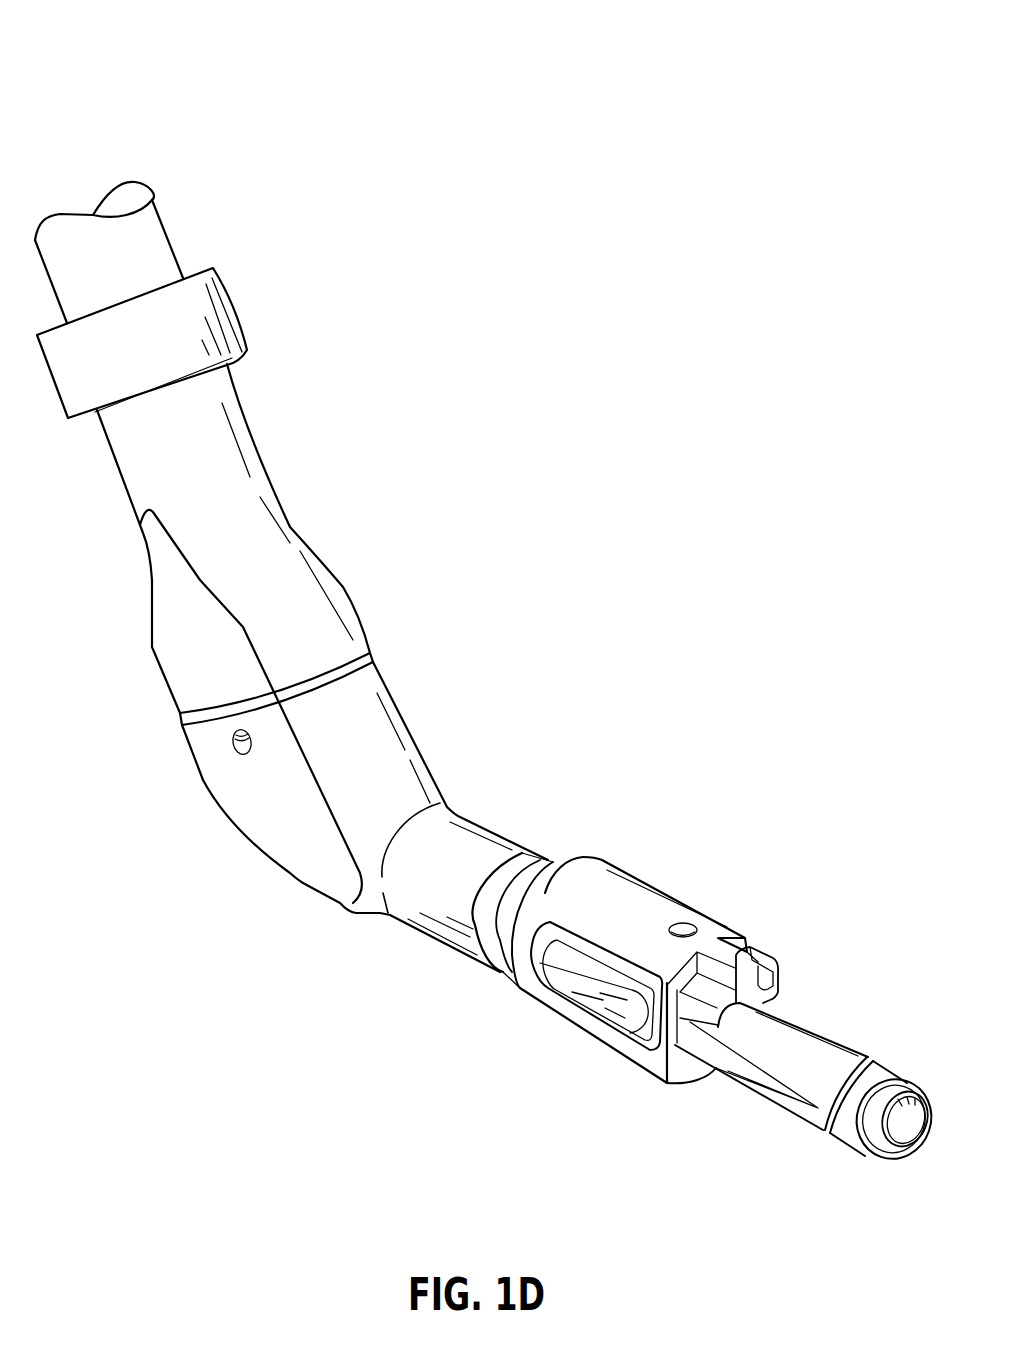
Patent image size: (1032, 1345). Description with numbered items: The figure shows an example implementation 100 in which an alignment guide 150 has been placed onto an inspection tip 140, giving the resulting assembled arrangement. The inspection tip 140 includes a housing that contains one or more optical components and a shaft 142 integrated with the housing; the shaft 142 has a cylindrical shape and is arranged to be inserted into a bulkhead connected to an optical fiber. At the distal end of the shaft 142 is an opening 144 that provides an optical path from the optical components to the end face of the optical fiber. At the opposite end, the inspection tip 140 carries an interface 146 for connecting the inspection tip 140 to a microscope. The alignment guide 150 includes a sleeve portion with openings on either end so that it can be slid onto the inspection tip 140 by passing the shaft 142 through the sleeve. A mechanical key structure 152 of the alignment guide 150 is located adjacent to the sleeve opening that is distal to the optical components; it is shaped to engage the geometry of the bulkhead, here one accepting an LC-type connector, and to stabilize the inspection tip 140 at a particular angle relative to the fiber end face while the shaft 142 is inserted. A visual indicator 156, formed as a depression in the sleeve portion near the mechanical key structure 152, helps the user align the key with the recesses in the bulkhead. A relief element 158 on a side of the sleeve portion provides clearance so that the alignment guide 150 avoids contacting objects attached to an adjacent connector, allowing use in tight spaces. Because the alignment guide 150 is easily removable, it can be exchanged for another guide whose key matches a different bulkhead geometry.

The example implementation 100 is at (110, 28).
The inspection tip 140 is at (391, 688).
The shaft 142 is at (775, 1050).
The opening 144 is at (897, 1133).
The interface 146 is at (240, 312).
The alignment guide 150 is at (610, 858).
The mechanical key structure 152 is at (758, 968).
The visual indicator 156 is at (687, 922).
The relief element 158 is at (577, 1003).